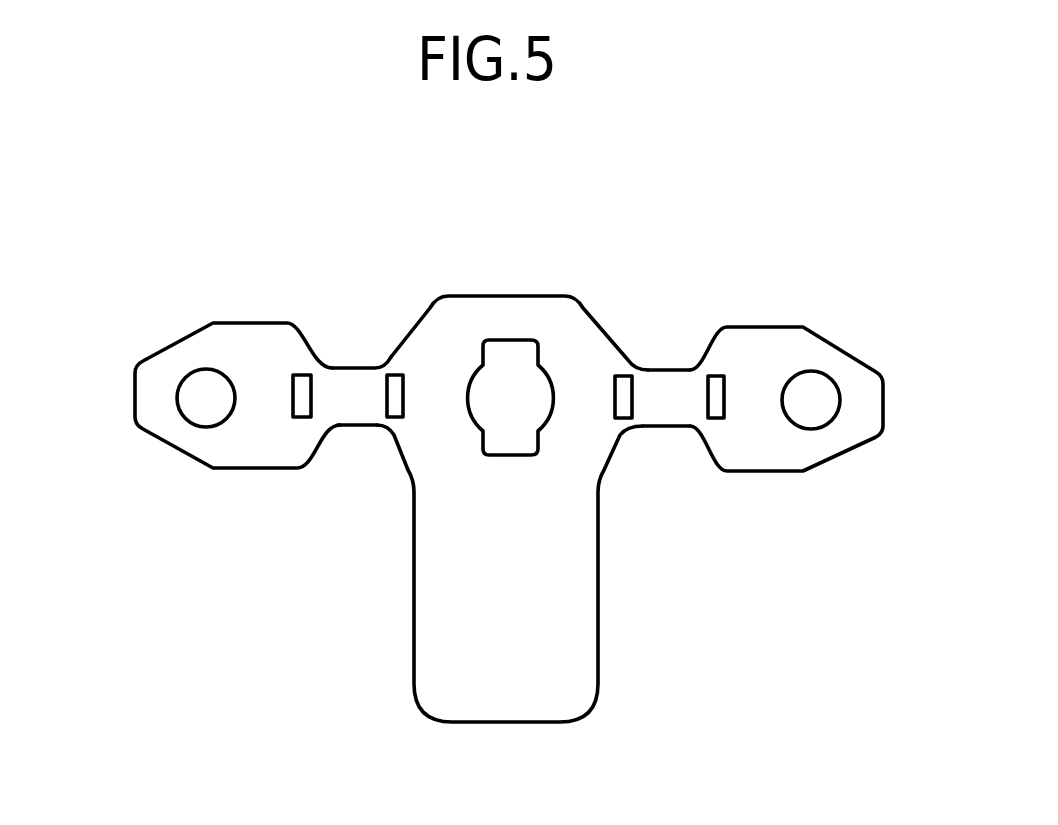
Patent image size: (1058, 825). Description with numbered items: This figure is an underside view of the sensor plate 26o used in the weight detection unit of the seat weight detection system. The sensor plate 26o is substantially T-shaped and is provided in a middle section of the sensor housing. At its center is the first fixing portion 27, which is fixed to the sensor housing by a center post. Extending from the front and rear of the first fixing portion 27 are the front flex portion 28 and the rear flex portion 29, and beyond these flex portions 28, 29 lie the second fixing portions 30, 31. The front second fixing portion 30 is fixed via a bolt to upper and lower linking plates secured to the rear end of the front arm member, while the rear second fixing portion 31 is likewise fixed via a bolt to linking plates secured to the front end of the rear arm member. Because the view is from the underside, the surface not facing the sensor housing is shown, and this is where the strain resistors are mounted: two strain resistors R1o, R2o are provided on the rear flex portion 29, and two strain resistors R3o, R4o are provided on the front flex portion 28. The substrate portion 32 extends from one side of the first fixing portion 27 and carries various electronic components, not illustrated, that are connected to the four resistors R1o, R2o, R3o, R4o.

The sensor plate 26o is at (413, 582).
The first fixing portion 27 is at (503, 300).
The front flex portion 28 is at (660, 392).
The rear flex portion 29 is at (352, 386).
The second fixing portion 30 is at (872, 378).
The second fixing portion 31 is at (152, 370).
The substrate portion 32 is at (588, 575).
The strain resistor R1o is at (393, 400).
The strain resistor R2o is at (303, 400).
The strain resistor R3o is at (632, 403).
The strain resistor R4o is at (717, 400).